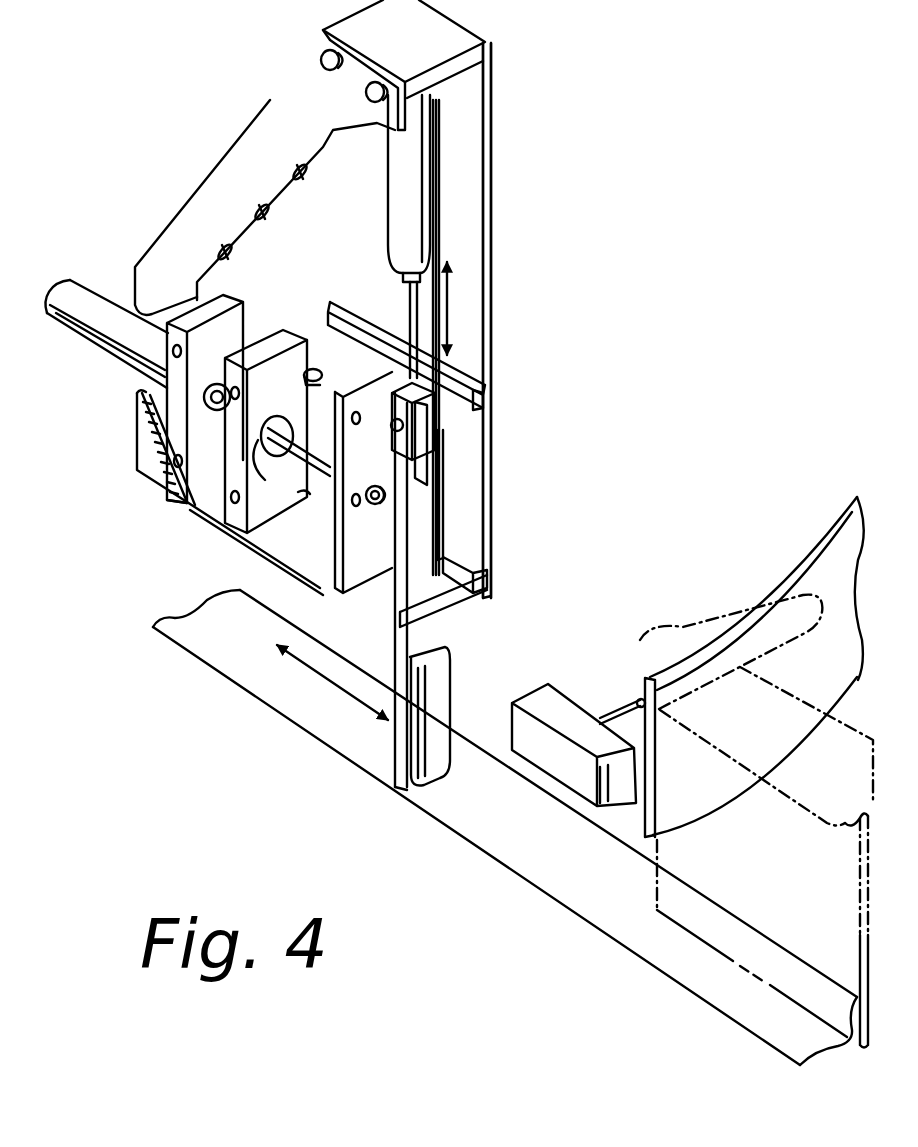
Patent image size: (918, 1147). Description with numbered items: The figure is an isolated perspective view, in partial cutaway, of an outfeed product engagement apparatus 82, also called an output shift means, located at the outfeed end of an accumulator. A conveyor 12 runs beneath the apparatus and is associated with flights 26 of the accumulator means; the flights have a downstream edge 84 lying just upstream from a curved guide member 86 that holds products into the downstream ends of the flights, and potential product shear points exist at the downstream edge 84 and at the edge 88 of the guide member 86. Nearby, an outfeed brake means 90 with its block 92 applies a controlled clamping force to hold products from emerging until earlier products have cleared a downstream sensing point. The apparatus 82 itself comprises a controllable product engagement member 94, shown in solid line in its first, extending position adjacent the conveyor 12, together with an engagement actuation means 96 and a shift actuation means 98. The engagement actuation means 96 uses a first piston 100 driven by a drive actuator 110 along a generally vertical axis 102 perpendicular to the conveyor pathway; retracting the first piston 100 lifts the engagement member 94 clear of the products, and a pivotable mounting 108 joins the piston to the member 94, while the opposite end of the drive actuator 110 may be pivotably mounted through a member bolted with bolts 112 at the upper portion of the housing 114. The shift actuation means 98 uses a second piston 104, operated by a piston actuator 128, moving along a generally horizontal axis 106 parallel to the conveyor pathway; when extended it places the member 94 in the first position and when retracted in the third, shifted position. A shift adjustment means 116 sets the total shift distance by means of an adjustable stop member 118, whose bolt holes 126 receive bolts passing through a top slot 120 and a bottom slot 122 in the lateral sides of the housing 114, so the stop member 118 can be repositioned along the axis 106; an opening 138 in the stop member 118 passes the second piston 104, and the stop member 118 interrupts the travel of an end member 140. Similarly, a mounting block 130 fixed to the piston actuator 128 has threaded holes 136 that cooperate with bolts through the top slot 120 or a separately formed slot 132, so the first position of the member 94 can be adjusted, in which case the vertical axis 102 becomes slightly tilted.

The conveyor 12 is at (548, 895).
The flights 26 is at (853, 880).
The outfeed product engagement apparatus 82 is at (547, 243).
The downstream edge 84 is at (660, 895).
The guide member 86 is at (830, 670).
The edge 88 is at (650, 823).
The outfeed brake means 90 is at (580, 683).
The block 92 is at (570, 755).
The controllable product engagement member 94 is at (440, 672).
The engagement actuation means 96 is at (458, 195).
The shift actuation means 98 is at (172, 543).
The first piston 100 is at (405, 308).
The vertical axis 102 is at (455, 305).
The second piston 104 is at (300, 406).
The horizontal axis 106 is at (330, 690).
The pivotable mounting 108 is at (395, 440).
The drive actuator 110 is at (396, 194).
The bolts 112 is at (320, 57).
The housing 114 is at (492, 60).
The shift adjustment means 116 is at (115, 423).
The adjustable stop member 118 is at (207, 505).
The top slot 120 is at (314, 372).
The bottom slot 122 is at (310, 495).
The bolt holes 126 is at (238, 398).
The piston actuator 128 is at (100, 330).
The mounting block 130 is at (237, 298).
The slot 132 is at (258, 340).
The threaded holes 136 is at (182, 352).
The opening 138 is at (262, 455).
The end member 140 is at (335, 588).